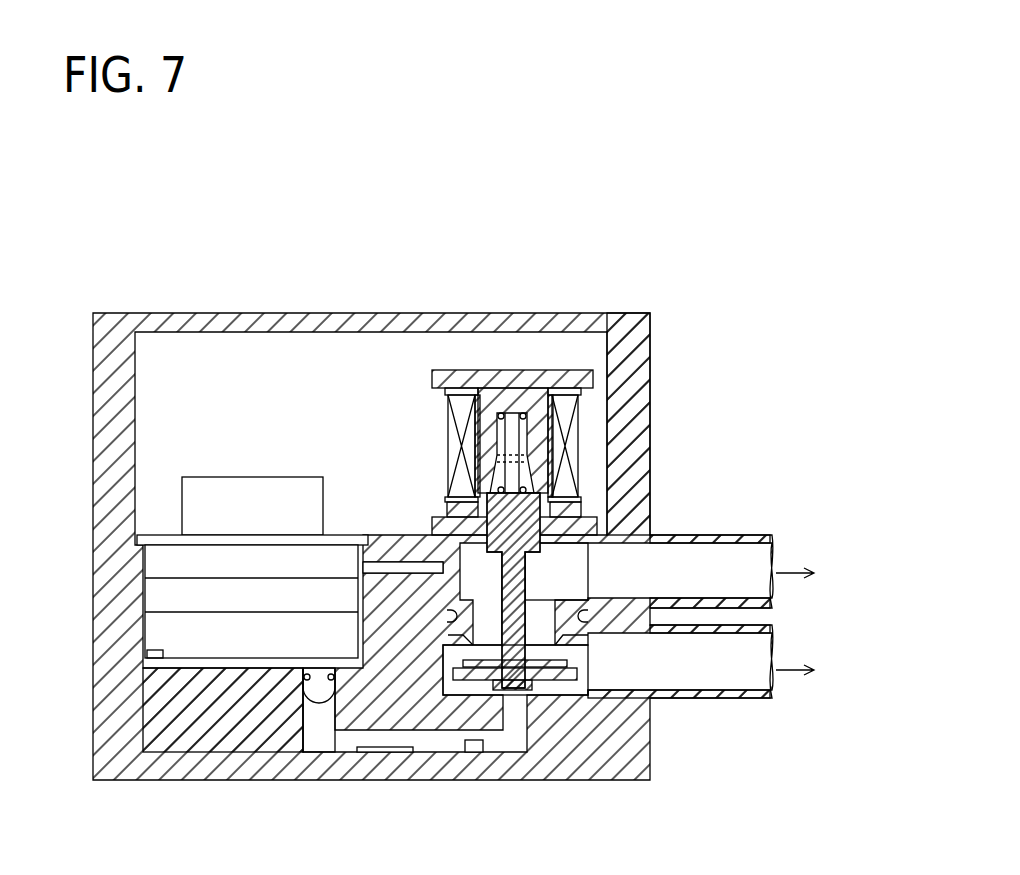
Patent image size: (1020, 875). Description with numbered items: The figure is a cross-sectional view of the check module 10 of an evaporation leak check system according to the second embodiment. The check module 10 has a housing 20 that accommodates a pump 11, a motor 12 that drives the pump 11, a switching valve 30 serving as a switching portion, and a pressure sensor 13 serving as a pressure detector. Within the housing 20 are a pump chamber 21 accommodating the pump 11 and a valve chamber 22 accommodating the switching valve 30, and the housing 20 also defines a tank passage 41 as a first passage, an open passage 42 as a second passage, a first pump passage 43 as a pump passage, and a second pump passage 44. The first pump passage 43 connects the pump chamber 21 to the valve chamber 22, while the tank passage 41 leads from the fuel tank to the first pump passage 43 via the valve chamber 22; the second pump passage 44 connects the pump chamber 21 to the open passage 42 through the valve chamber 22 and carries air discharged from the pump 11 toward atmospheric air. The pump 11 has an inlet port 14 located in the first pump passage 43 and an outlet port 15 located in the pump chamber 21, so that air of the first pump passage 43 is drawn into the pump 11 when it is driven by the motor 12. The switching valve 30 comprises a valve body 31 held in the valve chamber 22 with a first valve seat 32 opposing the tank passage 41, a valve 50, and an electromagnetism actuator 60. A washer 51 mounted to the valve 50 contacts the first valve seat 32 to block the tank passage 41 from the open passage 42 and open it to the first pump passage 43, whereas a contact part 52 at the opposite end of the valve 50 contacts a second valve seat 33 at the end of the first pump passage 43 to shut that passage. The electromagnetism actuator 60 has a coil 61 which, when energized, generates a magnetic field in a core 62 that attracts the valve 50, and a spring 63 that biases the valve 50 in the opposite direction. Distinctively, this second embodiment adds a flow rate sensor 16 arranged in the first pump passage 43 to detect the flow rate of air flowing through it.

The check module 10 is at (478, 509).
The pump 11 is at (177, 602).
The motor 12 is at (182, 502).
The pressure sensor 13 is at (357, 752).
The inlet port 14 is at (267, 727).
The outlet port 15 is at (145, 657).
The flow rate sensor 16 is at (483, 745).
The housing 20 is at (118, 782).
The pump chamber 21 is at (148, 558).
The valve chamber 22 is at (648, 533).
The switching valve 30 is at (543, 373).
The valve body 31 is at (560, 577).
The first valve seat 32 is at (540, 655).
The second valve seat 33 is at (545, 680).
The tank passage 41 is at (757, 670).
The open passage 42 is at (753, 570).
The first pump passage 43 is at (327, 742).
The second pump passage 44 is at (383, 562).
The valve 50 is at (581, 505).
The washer 51 is at (460, 668).
The contact part 52 is at (533, 687).
The electromagnetism actuator 60 is at (598, 445).
The coil 61 is at (447, 420).
The core 62 is at (517, 370).
The spring 63 is at (578, 418).